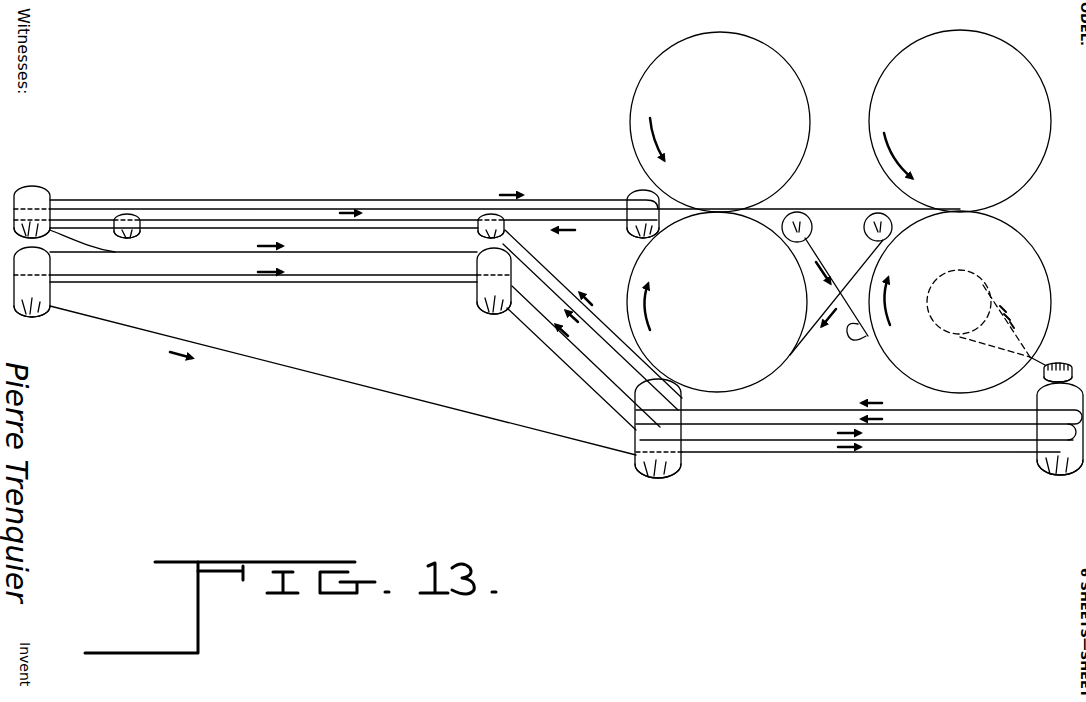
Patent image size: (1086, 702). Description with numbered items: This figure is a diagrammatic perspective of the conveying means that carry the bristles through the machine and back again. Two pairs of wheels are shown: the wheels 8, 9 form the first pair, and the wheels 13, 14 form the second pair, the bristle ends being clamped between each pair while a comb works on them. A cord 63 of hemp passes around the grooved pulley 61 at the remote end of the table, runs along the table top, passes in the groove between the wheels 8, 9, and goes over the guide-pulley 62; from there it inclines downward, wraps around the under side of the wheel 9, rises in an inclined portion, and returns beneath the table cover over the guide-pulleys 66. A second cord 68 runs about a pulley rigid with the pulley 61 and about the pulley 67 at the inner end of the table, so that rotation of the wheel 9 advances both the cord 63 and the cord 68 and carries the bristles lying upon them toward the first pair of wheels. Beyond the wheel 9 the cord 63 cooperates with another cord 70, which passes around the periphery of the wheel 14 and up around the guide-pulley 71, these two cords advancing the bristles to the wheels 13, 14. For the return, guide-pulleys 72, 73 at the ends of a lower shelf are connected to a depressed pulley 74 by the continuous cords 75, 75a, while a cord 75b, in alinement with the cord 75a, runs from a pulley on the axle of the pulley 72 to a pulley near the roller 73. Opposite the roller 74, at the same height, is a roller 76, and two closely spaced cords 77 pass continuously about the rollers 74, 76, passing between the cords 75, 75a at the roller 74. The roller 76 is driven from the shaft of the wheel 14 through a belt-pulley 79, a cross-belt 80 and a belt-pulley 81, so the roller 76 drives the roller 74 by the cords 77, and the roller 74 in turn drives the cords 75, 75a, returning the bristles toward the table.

The wheel 8 is at (720, 122).
The wheel 9 is at (717, 302).
The wheel 13 is at (960, 121).
The wheel 14 is at (960, 302).
The grooved pulley 61 is at (34, 192).
The guide-pulley 62 is at (877, 226).
The cord 63 is at (249, 221).
The guide-pulleys 66 is at (140, 236).
The pulley 67 is at (630, 192).
The cord 68 is at (165, 220).
The cord 70 is at (870, 338).
The guide-pulley 71 is at (796, 226).
The guide-pulley 72 is at (26, 318).
The guide-pulley 73 is at (480, 312).
The depressed pulley 74 is at (657, 474).
The continuous cord 75 is at (324, 283).
The continuous cord 75a is at (550, 310).
The continuous cord 75b is at (147, 255).
The roller 76 is at (1050, 474).
The cords 77 is at (778, 412).
The belt-pulley 79 is at (983, 285).
The cross-belt 80 is at (1035, 358).
The belt-pulley 81 is at (1062, 364).